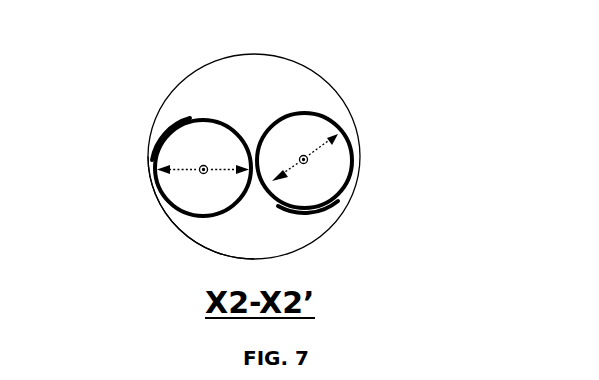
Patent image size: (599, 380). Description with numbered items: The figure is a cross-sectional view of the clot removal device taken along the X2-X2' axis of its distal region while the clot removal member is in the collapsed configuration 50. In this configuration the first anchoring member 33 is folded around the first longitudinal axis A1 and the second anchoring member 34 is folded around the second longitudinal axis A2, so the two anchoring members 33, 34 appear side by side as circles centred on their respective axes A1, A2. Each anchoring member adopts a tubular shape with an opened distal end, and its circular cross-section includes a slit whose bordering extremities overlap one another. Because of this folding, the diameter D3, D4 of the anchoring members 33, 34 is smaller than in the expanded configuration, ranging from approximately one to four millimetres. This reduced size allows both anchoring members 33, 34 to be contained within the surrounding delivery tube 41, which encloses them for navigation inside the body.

The collapsed configuration 50 is at (357, 108).
The delivery tube 41 is at (188, 242).
The first anchoring member 33 is at (134, 158).
The second anchoring member 34 is at (368, 180).
The first longitudinal axis A1 is at (305, 152).
The second longitudinal axis A2 is at (201, 172).
The diameter D3 is at (342, 138).
The diameter D4 is at (163, 129).